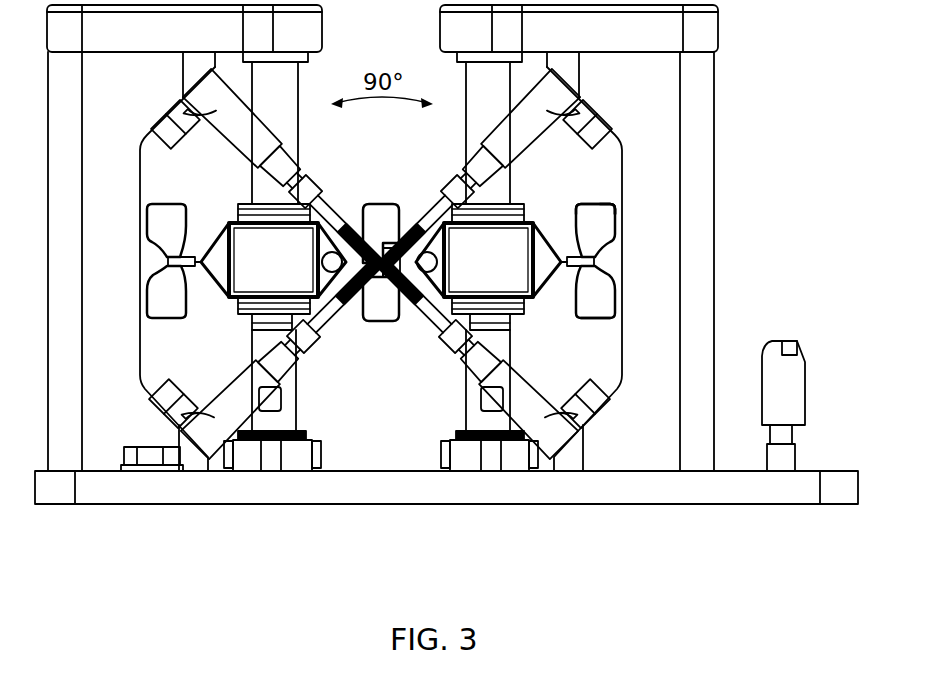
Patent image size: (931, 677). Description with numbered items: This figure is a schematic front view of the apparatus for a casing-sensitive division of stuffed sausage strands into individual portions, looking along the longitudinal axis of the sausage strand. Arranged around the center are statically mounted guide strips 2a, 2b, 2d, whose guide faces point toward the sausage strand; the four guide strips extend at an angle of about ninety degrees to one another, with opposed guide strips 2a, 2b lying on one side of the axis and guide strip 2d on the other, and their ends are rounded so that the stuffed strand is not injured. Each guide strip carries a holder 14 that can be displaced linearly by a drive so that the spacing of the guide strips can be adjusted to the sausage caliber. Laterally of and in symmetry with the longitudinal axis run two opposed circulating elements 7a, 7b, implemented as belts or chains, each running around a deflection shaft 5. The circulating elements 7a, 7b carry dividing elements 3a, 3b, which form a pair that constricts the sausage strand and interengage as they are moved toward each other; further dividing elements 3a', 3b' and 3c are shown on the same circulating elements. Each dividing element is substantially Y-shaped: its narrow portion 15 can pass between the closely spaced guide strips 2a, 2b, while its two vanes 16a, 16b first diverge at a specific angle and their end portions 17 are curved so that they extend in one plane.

The guide strip 2a is at (341, 214).
The guide strip 2b is at (343, 303).
The guide strip 2d is at (420, 305).
The holder 14 is at (300, 178).
The dividing element 3a is at (383, 211).
The dividing element 3b is at (391, 321).
The clamping jaw 3c is at (425, 204).
The clamping jaw 3a' is at (167, 209).
The clamping jaw 3b' is at (595, 188).
The deflection shaft 5 is at (383, 321).
The circulating element 7a is at (245, 287).
The circulating element 7b is at (520, 288).
The narrow portion 15 is at (196, 243).
The vane 16a is at (604, 297).
The vane 16b is at (604, 228).
The end portion 17 is at (606, 200).